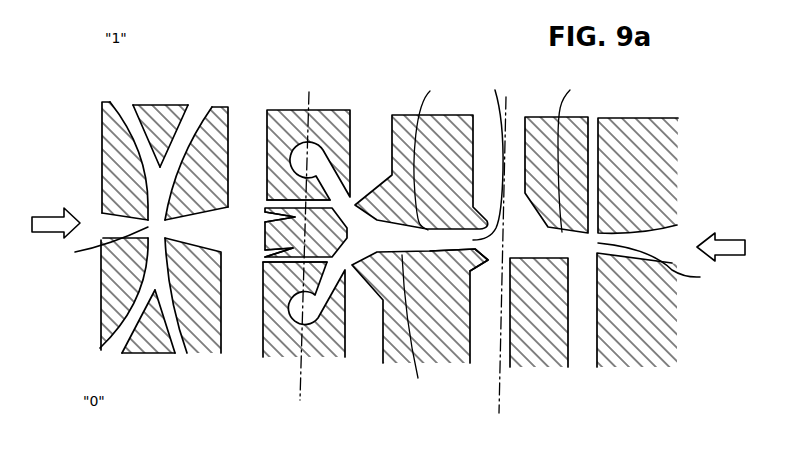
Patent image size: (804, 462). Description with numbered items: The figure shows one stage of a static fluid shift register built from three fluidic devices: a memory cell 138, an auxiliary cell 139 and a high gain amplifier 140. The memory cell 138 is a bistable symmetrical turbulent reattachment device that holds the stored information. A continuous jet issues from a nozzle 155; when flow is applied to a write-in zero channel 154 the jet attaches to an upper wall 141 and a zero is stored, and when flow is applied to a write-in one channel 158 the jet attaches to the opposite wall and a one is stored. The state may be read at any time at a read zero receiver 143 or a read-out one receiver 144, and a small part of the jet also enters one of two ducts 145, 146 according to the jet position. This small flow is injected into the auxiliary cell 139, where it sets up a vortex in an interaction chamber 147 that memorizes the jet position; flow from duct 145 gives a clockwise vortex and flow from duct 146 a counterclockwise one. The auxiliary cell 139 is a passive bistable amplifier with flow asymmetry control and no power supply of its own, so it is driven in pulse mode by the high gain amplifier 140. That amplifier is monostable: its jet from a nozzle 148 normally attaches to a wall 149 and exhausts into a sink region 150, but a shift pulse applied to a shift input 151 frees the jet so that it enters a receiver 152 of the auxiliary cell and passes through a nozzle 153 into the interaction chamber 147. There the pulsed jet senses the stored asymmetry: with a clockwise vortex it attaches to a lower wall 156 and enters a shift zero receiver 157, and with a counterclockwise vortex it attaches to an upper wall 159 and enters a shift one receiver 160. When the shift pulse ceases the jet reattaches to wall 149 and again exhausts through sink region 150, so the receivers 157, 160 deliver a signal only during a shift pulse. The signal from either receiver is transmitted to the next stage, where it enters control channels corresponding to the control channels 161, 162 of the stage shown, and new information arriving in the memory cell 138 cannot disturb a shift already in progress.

The memory cell 138 is at (140, 249).
The auxiliary cell 139 is at (366, 255).
The high gain amplifier 140 is at (620, 261).
The upper wall 141 is at (195, 216).
The read zero receiver 143 is at (265, 216).
The read-out one receiver 144 is at (266, 252).
The duct 145 is at (270, 190).
The duct 146 is at (292, 263).
The interaction chamber 147 is at (322, 228).
The nozzle 148 is at (664, 263).
The wall 149 is at (577, 155).
The sink region 150 is at (520, 130).
The shift input 151 is at (597, 128).
The receiver 152 is at (485, 159).
The nozzle 153 is at (429, 251).
The write-in zero channel 154 is at (117, 353).
The nozzle 155 is at (100, 243).
The lower wall 156 is at (420, 320).
The shift zero receiver 157 is at (293, 325).
The write-in one channel 158 is at (125, 108).
The upper wall 159 is at (421, 153).
The shift one receiver 160 is at (302, 150).
The control channel 161 is at (197, 112).
The control channel 162 is at (187, 338).